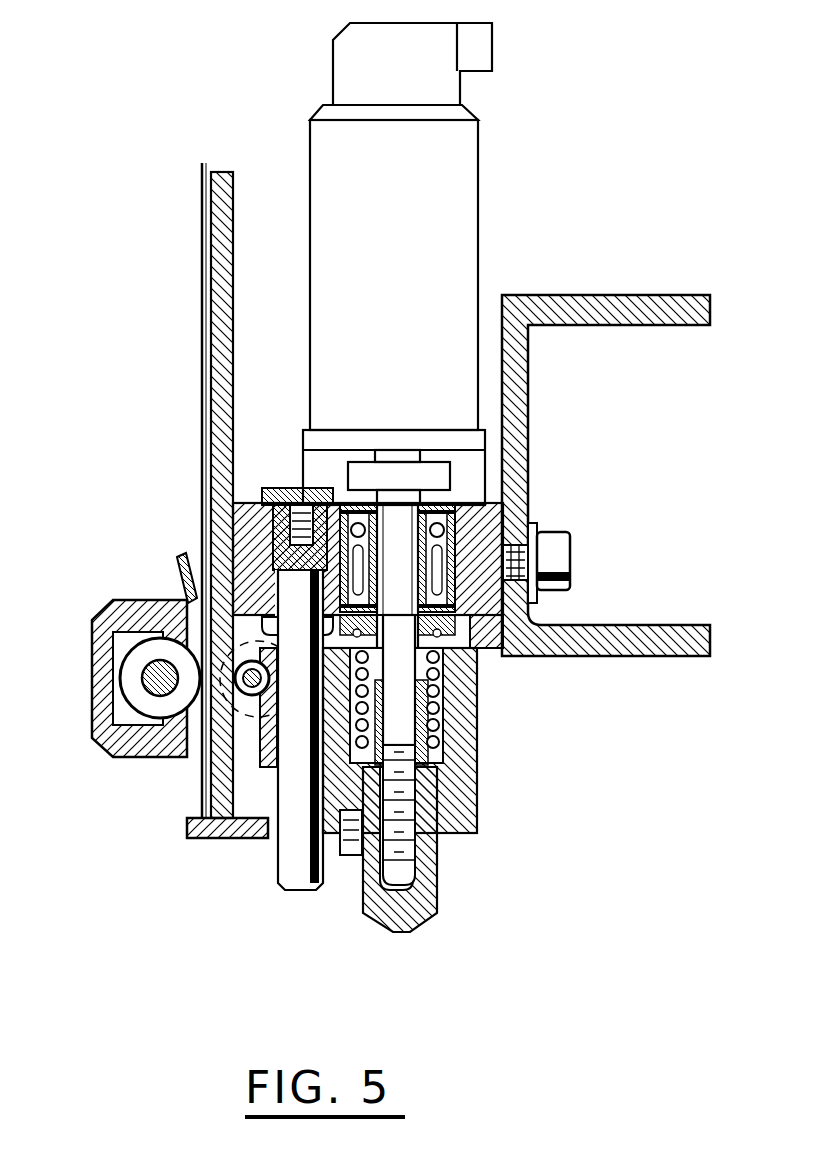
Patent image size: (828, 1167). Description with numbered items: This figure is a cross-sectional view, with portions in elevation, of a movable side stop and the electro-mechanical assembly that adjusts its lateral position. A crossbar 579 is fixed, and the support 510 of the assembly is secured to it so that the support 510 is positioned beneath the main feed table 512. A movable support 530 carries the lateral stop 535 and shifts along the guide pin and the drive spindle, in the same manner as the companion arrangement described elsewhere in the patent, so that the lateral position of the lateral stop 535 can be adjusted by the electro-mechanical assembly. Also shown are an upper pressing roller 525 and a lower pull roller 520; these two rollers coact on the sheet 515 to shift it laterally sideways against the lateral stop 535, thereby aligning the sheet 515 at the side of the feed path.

The support 510 is at (255, 548).
The main feed table 512 is at (211, 383).
The sheet 515 is at (202, 250).
The lower pull roller 520 is at (252, 695).
The upper pressing roller 525 is at (160, 700).
The movable support 530 is at (478, 805).
The lateral stop 535 is at (190, 830).
The crossbar 579 is at (597, 320).